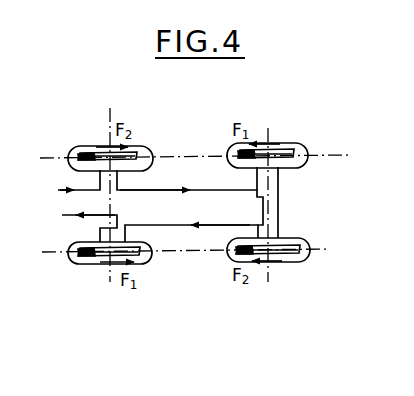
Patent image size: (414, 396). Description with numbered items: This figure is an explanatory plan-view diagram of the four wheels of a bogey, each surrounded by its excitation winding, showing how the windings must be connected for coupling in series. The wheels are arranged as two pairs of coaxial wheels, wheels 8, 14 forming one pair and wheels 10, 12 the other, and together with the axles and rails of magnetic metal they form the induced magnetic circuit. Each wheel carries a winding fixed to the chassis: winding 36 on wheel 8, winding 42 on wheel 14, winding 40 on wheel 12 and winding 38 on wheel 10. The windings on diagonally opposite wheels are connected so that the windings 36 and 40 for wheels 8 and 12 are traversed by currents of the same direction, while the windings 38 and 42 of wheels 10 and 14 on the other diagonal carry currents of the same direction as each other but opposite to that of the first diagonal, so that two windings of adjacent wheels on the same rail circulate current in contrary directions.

The wheel 8 is at (96, 263).
The wheel 10 is at (294, 244).
The wheel 12 is at (288, 148).
The wheel 14 is at (90, 151).
The excitation winding 36 is at (122, 263).
The excitation winding 38 is at (295, 263).
The excitation winding 40 is at (309, 149).
The excitation winding 42 is at (155, 151).